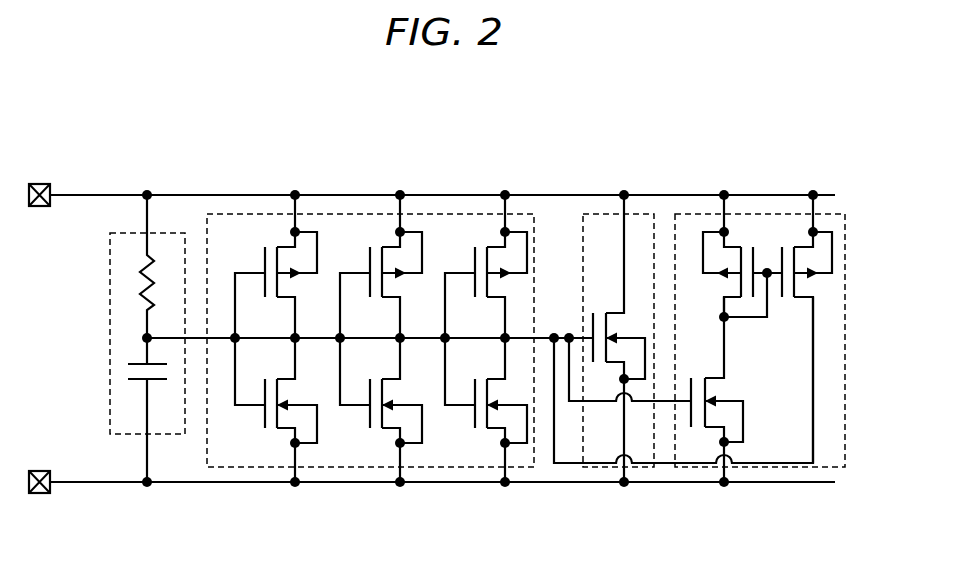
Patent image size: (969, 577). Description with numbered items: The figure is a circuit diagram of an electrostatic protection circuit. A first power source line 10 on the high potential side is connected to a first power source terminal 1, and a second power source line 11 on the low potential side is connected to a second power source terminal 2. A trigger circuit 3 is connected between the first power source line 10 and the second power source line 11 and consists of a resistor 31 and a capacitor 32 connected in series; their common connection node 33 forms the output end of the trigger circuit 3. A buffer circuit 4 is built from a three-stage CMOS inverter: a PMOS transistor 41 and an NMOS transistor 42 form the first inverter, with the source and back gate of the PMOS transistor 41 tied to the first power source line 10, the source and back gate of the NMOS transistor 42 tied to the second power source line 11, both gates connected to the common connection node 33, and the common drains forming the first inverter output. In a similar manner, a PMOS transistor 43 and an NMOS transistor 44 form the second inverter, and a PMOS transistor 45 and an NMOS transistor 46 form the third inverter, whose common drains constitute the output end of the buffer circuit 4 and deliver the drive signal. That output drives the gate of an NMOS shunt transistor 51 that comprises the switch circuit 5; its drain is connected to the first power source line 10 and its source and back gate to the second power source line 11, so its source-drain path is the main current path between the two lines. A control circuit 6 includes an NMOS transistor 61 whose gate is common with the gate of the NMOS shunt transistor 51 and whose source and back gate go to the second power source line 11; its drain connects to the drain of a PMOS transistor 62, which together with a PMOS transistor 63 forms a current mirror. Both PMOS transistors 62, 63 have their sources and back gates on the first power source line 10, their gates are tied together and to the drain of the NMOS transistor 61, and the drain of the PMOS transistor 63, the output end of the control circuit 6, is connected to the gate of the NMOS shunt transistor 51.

The first power source terminal 1 is at (41, 185).
The second power source terminal 2 is at (41, 472).
The trigger circuit 3 is at (108, 402).
The buffer circuit 4 is at (432, 213).
The switch circuit 5 is at (640, 213).
The control circuit 6 is at (693, 213).
The first power source line 10 is at (318, 193).
The second power source line 11 is at (564, 485).
The resistor 31 is at (137, 275).
The capacitor 32 is at (128, 372).
The common connection node 33 is at (142, 338).
The PMOS transistor 41 is at (278, 233).
The NMOS transistor 42 is at (280, 448).
The PMOS transistor 43 is at (383, 233).
The NMOS transistor 44 is at (385, 448).
The PMOS transistor 45 is at (494, 233).
The NMOS transistor 46 is at (495, 448).
The NMOS shunt transistor 51 is at (607, 300).
The NMOS transistor 61 is at (713, 448).
The PMOS transistor 62 is at (737, 233).
The PMOS transistor 63 is at (800, 233).